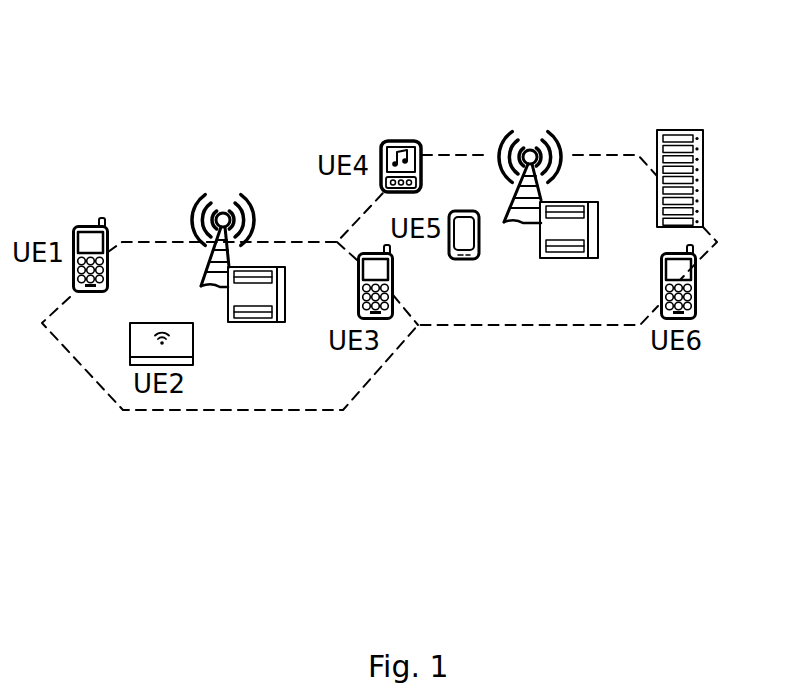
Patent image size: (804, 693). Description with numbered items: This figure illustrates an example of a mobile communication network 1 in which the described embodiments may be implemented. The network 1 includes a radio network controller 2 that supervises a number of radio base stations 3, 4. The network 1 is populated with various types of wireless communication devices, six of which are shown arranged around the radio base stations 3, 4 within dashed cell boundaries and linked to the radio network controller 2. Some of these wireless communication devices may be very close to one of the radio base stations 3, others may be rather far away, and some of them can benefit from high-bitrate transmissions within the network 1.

The mobile communication network 1 is at (628, 90).
The radio network controller 2 is at (673, 130).
The radio base station 3 is at (598, 229).
The radio base station 4 is at (285, 307).